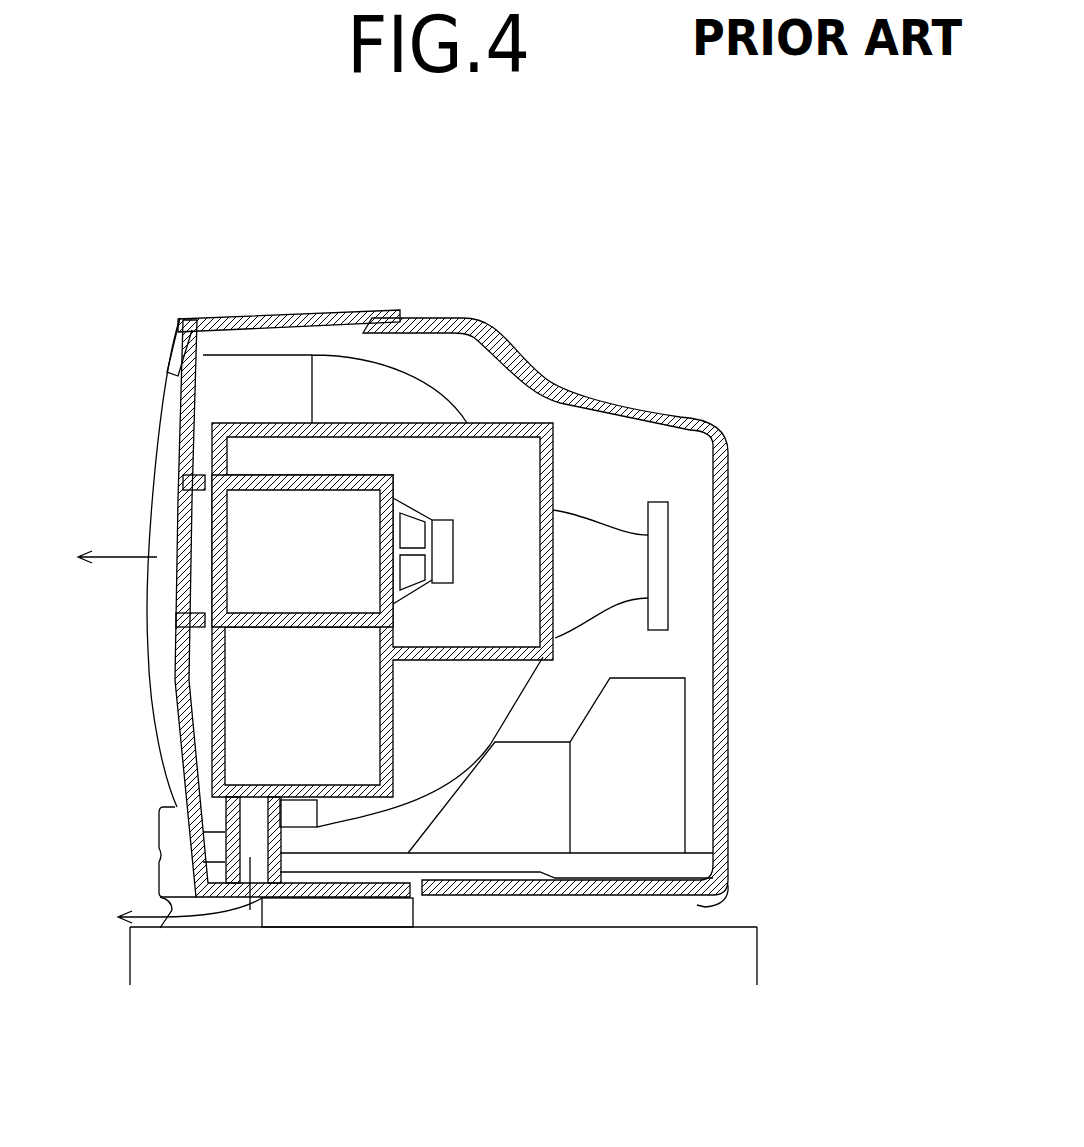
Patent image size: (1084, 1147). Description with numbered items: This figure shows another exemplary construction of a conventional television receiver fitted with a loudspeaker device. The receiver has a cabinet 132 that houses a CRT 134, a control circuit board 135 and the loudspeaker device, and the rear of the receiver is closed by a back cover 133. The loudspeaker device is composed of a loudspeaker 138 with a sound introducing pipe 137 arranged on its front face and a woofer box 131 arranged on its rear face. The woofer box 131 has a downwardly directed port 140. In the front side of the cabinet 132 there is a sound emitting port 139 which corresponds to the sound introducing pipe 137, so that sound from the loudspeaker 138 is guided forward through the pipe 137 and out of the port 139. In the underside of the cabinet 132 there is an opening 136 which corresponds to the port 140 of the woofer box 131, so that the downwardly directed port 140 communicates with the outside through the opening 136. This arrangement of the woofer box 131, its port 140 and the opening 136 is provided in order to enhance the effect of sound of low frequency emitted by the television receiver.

The woofer box 131 is at (483, 423).
The cabinet 132 is at (303, 318).
The back cover 133 is at (688, 400).
The CRT 134 is at (635, 568).
The control circuit board 135 is at (642, 858).
The opening 136 is at (263, 927).
The sound introducing pipe 137 is at (233, 572).
The loudspeaker 138 is at (453, 533).
The sound emitting port 139 is at (178, 520).
The port 140 is at (243, 842).